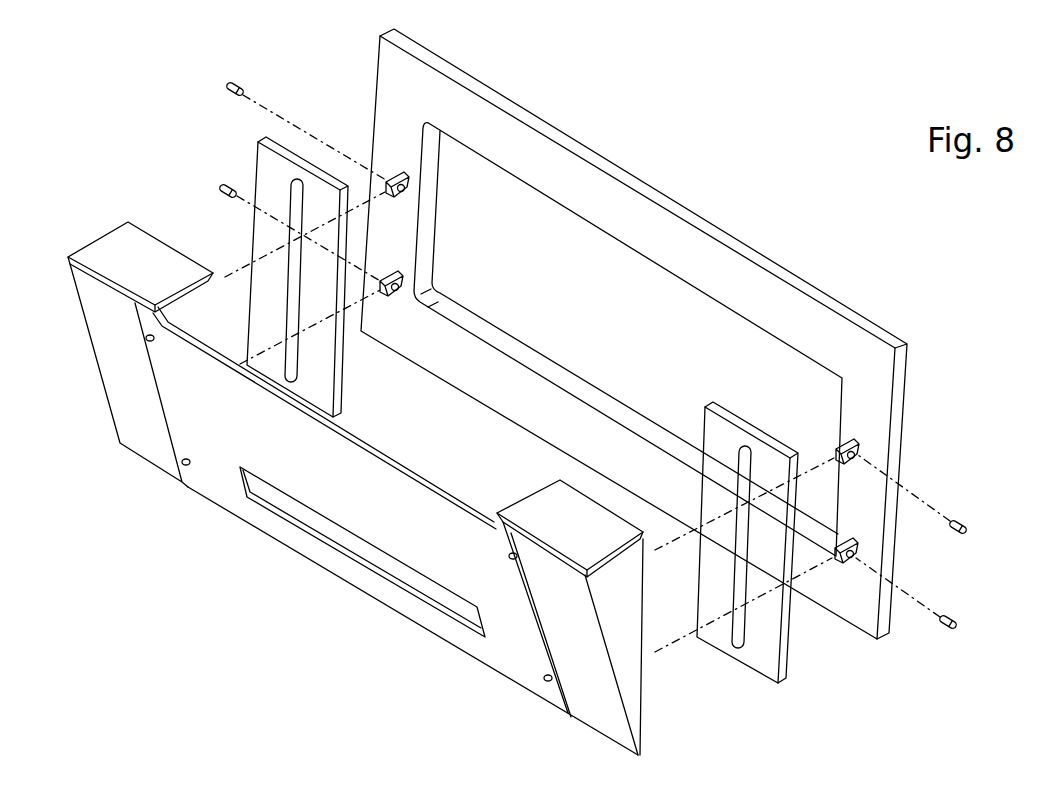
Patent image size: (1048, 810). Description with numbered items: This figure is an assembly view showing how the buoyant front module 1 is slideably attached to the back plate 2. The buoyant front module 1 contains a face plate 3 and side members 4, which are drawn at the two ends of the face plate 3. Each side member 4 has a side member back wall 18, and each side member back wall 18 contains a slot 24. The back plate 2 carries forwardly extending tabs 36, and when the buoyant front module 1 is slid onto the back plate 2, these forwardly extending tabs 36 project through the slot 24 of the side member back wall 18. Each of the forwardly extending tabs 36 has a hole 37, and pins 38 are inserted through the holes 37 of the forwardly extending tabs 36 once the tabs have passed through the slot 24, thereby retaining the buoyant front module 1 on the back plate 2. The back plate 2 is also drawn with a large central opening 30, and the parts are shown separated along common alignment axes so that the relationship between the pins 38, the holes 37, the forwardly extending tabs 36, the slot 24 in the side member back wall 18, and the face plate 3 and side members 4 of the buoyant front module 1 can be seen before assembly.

The buoyant front module 1 is at (362, 586).
The back plate 2 is at (634, 334).
The face plate 3 is at (392, 531).
The side members 4 is at (366, 488).
The side member back wall 18 is at (267, 138).
The slot 24 is at (293, 201).
The window opening 30 is at (628, 339).
The forwardly extending tabs 36 is at (399, 167).
The holes 37 is at (402, 198).
The pins 38 is at (221, 187).